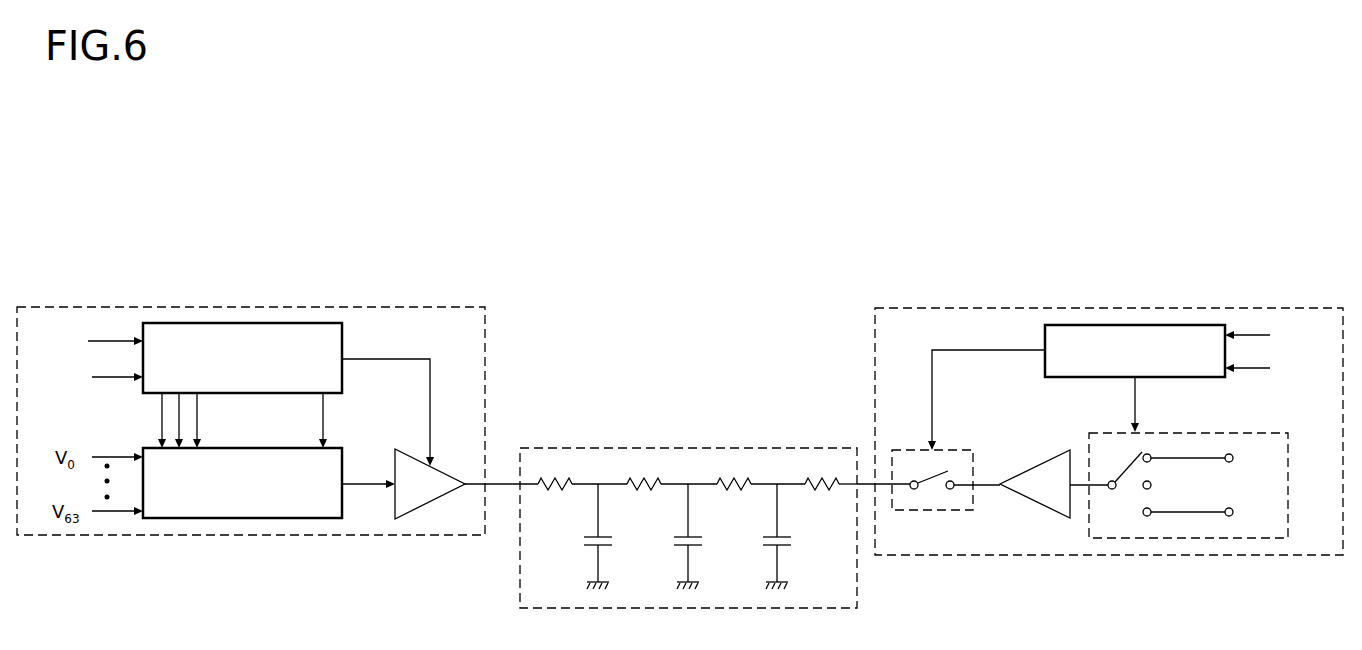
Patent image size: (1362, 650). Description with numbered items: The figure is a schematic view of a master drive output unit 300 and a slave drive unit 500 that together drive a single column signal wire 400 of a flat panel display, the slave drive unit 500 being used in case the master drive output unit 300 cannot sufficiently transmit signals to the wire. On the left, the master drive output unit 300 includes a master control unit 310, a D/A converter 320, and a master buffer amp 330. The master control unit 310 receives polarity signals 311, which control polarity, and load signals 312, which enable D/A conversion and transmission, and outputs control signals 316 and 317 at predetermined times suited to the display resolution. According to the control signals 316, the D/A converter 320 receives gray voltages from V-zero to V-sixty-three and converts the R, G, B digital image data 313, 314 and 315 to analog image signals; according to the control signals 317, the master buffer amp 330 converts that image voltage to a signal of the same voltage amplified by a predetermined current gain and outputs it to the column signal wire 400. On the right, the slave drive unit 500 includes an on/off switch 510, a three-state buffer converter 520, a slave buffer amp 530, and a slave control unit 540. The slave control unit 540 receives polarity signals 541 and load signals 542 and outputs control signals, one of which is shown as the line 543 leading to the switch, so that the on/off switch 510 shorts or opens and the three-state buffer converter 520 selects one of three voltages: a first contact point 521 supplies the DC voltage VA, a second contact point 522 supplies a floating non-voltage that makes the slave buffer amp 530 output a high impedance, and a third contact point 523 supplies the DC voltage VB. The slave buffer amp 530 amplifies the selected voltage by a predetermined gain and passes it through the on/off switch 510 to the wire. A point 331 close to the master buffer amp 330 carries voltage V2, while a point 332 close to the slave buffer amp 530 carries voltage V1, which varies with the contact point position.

The master drive output unit 300 is at (240, 307).
The master control unit 310 is at (188, 323).
The polarity signals 311 is at (117, 340).
The load signals 312 is at (112, 378).
The R digital image data 313 is at (160, 422).
The G digital image data 314 is at (199, 428).
The B digital image data 315 is at (200, 409).
The control signals 316 is at (326, 432).
The control signals 317 is at (392, 359).
The D/A converter 320 is at (242, 519).
The master buffer amp 330 is at (428, 504).
The point close to the master buffer amp 331 is at (498, 483).
The point close to the slave buffer amp 332 is at (857, 484).
The column signal wire 400 is at (690, 448).
The slave drive unit 500 is at (1110, 308).
The on/off switch 510 is at (930, 514).
The three-state buffer converter 520 is at (1178, 539).
The first contact point 521 is at (1175, 458).
The second contact point 522 is at (1155, 485).
The third contact point 523 is at (1215, 513).
The slave buffer amp 530 is at (1033, 502).
The slave control unit 540 is at (1165, 325).
The polarity signals 541 is at (1234, 335).
The load signals 542 is at (1236, 370).
The switch control line 543 is at (1000, 350).